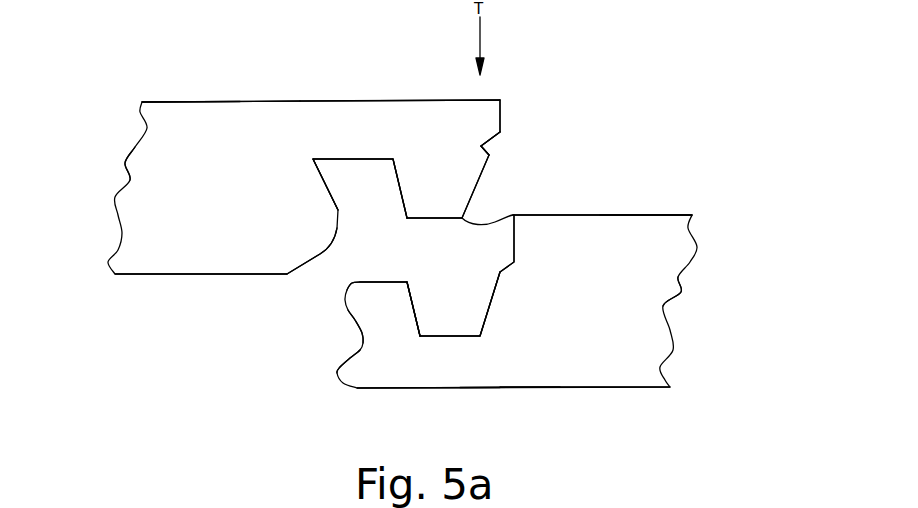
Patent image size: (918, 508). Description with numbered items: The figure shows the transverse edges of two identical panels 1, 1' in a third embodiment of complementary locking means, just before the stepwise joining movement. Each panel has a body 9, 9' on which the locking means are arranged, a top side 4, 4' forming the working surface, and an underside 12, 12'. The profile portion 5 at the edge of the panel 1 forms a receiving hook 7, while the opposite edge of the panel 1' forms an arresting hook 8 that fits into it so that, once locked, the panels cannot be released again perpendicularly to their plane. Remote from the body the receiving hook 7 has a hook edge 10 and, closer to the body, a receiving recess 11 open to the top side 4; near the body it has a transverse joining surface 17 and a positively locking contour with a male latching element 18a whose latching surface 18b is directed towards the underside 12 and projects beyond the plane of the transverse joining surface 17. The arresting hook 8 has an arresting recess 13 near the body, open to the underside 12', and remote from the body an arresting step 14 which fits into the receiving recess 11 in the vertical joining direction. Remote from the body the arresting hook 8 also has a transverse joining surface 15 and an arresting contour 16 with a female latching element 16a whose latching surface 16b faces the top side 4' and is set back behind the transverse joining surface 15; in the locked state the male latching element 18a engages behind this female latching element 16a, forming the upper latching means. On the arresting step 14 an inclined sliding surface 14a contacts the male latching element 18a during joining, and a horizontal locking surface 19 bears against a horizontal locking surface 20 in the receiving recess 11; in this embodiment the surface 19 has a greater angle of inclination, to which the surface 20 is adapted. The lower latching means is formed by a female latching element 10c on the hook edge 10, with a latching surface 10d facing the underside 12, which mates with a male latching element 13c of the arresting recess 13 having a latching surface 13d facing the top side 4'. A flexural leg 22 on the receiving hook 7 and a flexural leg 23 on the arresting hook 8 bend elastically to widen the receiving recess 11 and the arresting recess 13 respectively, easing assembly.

The panel 1 is at (692, 175).
The panel 1' is at (221, 63).
The top side 4 is at (613, 176).
The top side of panel 1' 4' is at (169, 63).
The profile portion 5 is at (648, 398).
The receiving hook 7 is at (624, 380).
The arresting hook 8 is at (201, 143).
The body 9 is at (709, 293).
The body 9' is at (82, 163).
The hook edge 10 is at (395, 320).
The female latching element 10c is at (356, 347).
The latching surface 10d is at (351, 326).
The receiving recess 11 is at (472, 313).
The underside 12 is at (428, 427).
The underside 12' is at (193, 311).
The arresting recess 13 is at (381, 203).
The male latching element 13c is at (330, 242).
The latching surface 13d is at (344, 213).
The arresting step 14 is at (434, 204).
The inclined sliding surface 14a is at (470, 200).
The transverse joining surface 15 is at (504, 101).
The arresting contour 16 is at (545, 105).
The female latching element 16a is at (488, 139).
The latching surface 16b is at (488, 152).
The transverse joining surface 17 is at (462, 222).
The male latching element 18a is at (503, 272).
The latching surface 18b is at (500, 277).
The horizontal locking surface 19 is at (398, 181).
The horizontal locking surface 20 is at (408, 283).
The flexural leg 22 is at (496, 386).
The flexural leg 23 is at (349, 101).